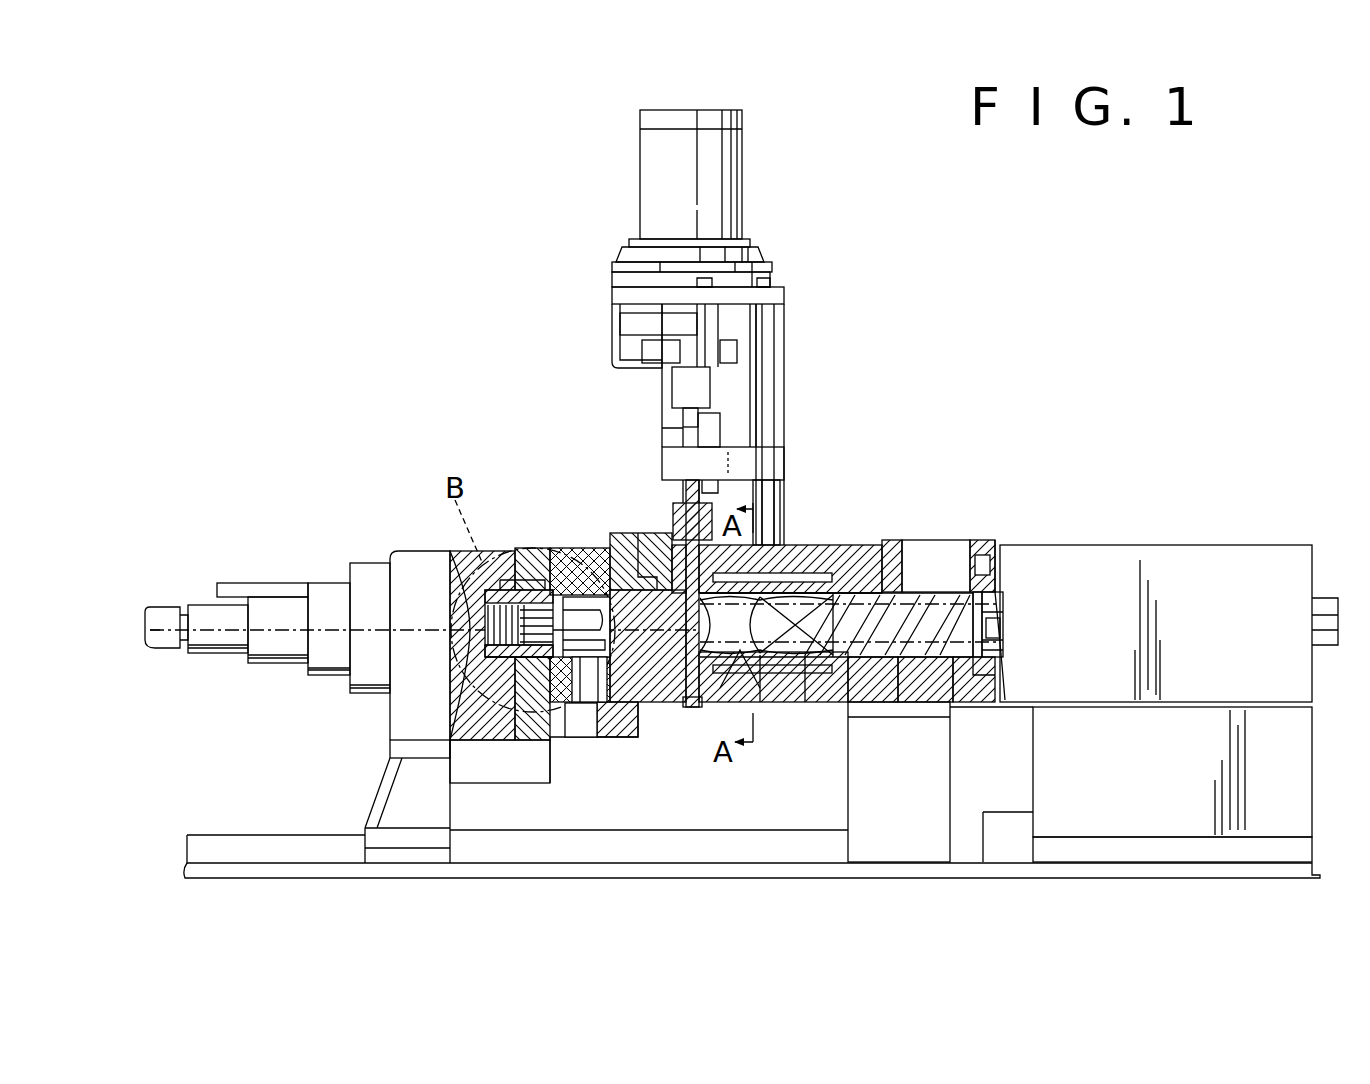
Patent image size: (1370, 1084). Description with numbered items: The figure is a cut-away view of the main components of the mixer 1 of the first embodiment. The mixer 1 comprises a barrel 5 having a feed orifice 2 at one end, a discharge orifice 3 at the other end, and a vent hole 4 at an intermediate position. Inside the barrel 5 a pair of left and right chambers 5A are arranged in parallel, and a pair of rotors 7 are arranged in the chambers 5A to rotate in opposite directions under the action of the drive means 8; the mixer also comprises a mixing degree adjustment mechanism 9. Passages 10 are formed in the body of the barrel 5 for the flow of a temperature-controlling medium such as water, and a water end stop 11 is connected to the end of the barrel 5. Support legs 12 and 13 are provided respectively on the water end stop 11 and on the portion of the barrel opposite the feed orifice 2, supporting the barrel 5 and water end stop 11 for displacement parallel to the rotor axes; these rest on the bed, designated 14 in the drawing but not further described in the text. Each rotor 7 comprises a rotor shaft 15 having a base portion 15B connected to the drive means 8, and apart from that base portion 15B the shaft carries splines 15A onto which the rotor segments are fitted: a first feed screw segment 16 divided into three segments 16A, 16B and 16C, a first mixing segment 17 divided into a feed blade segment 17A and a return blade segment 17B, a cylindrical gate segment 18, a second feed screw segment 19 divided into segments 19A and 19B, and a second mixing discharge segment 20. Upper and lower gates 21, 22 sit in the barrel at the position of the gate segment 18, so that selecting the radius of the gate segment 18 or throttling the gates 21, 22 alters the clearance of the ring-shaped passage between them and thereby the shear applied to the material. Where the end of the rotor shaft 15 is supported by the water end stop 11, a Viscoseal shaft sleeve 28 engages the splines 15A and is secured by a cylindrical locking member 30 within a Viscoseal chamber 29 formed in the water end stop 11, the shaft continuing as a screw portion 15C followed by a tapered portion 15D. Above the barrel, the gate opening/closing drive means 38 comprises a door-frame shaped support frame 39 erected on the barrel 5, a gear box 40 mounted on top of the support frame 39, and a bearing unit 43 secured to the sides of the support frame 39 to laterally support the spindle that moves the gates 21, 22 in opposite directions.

The mixer 1 is at (305, 497).
The feed orifice 2 is at (975, 560).
The discharge orifice 3 is at (570, 740).
The vent hole 4 is at (670, 587).
The barrel 5 is at (853, 570).
The chambers 5A is at (947, 555).
The rotors 7 is at (975, 615).
The drive means 8 is at (1218, 570).
The mixing degree adjustment mechanism 9 is at (656, 470).
The passages 10 is at (826, 578).
The water end stop 11 is at (375, 580).
The support leg 12 is at (400, 785).
The support leg 13 is at (893, 855).
The bed plate 14 is at (640, 870).
The rotor shaft 15 is at (785, 603).
The splines 15A is at (537, 597).
The base portion 15B is at (993, 628).
The screw portion 15C is at (460, 645).
The tapered portion 15D is at (460, 621).
The first feed screw segment 16 is at (1008, 760).
The segment 16A is at (955, 690).
The segment 16B is at (905, 690).
The segment 16C is at (858, 690).
The first mixing segment 17 is at (742, 786).
The feed blade segment 17A is at (770, 690).
The return blade segment 17B is at (812, 690).
The gate segment 18 is at (737, 690).
The second feed screw segment 19 is at (658, 786).
The segment 19A is at (612, 702).
The segment 19B is at (575, 715).
The second mixing discharge segment 20 is at (573, 597).
The upper gate 21 is at (662, 553).
The lower gate 22 is at (696, 708).
The Viscoseal shaft sleeve 28 is at (498, 587).
The Viscoseal chamber 29 is at (490, 730).
The cylindrical locking member 30 is at (480, 557).
The gate opening/closing drive means 38 is at (670, 354).
The support frame 39 is at (778, 375).
The gear box 40 is at (735, 183).
The bearing unit 43 is at (757, 448).